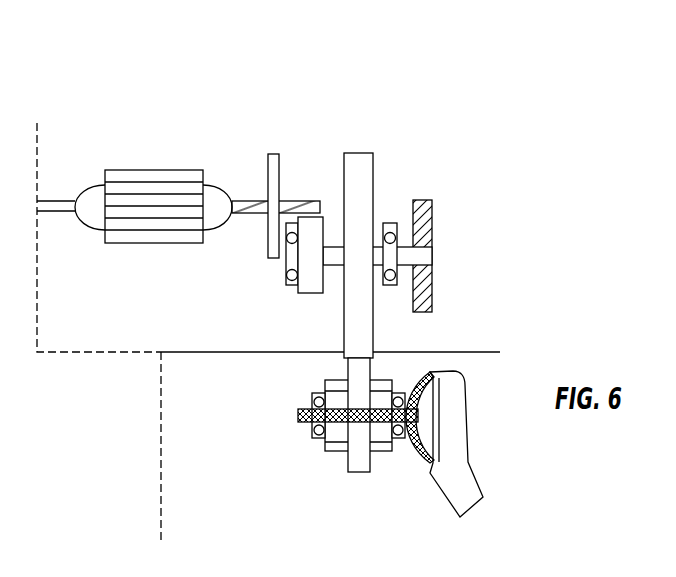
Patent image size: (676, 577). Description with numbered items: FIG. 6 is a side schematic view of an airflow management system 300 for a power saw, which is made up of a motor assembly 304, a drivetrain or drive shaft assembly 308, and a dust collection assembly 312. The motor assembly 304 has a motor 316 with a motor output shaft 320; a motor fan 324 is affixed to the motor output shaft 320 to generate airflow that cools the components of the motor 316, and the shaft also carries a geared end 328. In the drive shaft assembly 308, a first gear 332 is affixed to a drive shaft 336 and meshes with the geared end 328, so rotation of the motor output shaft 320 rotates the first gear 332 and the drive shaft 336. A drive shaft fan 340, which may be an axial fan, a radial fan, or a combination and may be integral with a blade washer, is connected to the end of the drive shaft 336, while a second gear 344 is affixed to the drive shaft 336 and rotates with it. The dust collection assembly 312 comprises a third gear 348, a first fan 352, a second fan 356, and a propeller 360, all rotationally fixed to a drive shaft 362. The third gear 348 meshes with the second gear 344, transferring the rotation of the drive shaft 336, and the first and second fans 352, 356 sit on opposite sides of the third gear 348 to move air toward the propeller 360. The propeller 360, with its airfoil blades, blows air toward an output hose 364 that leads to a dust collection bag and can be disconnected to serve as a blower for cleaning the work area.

The airflow management system 300 is at (412, 97).
The motor assembly 304 is at (202, 158).
The drive shaft assembly 308 is at (436, 168).
The dust collection assembly 312 is at (285, 395).
The motor 316 is at (158, 228).
The motor output shaft 320 is at (298, 205).
The motor fan 324 is at (273, 230).
The geared end 328 is at (321, 214).
The first gear 332 is at (312, 278).
The drive shaft 336 is at (427, 257).
The drive shaft fan 340 is at (427, 218).
The second gear 344 is at (365, 166).
The third gear 348 is at (357, 465).
The first fan 352 is at (338, 443).
The second fan 356 is at (377, 447).
The propeller 360 is at (428, 372).
The drive shaft 362 is at (302, 421).
The output hose 364 is at (463, 495).